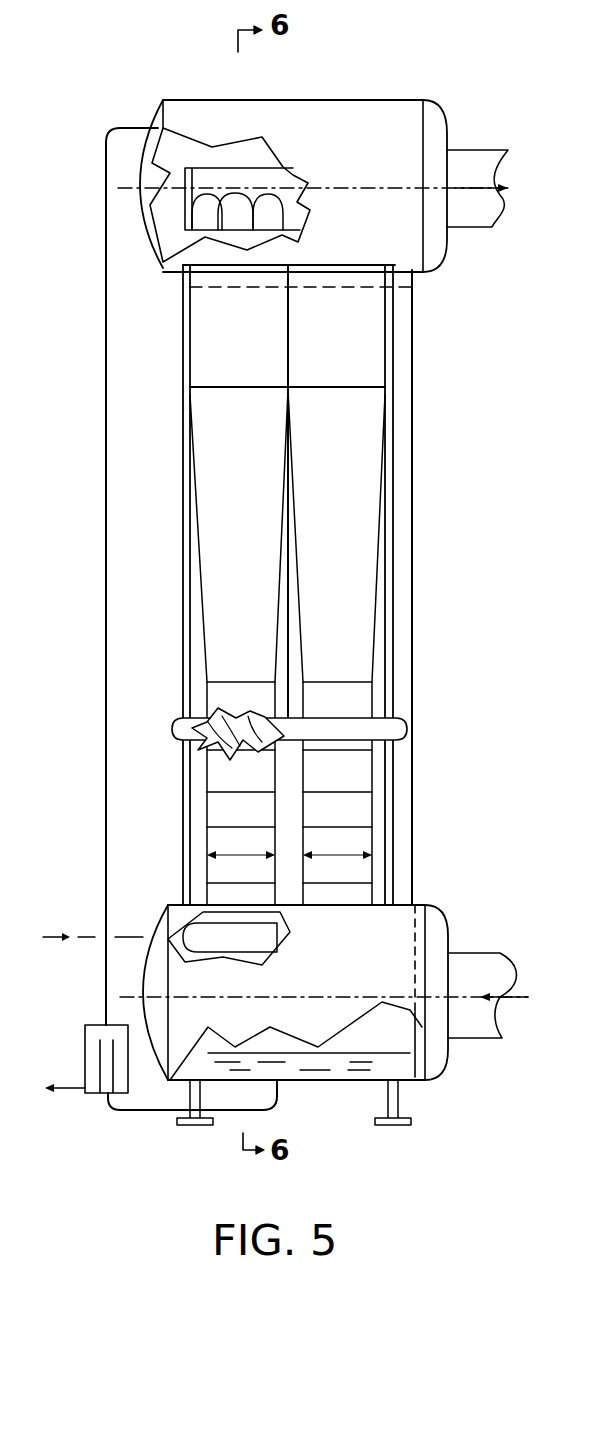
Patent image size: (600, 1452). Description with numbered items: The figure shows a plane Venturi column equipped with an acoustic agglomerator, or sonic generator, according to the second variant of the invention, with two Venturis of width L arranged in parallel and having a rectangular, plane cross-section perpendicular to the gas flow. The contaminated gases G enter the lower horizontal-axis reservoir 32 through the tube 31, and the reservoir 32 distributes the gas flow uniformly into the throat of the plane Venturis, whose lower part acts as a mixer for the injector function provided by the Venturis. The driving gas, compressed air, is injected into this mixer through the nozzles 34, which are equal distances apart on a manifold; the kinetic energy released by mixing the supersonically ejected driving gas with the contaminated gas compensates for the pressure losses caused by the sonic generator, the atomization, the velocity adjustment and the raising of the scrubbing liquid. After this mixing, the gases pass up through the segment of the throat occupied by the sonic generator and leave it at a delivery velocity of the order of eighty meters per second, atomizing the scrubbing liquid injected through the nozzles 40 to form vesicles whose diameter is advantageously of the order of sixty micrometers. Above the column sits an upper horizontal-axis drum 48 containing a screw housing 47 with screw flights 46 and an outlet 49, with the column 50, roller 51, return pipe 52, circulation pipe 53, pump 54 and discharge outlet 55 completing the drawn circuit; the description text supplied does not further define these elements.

The tube 31 is at (490, 1027).
The lower horizontal-axis reservoir 32 is at (367, 950).
The nozzles 34 is at (258, 918).
The nozzles 40 is at (237, 723).
The screw flights 46 is at (250, 192).
The screw housing 47 is at (173, 247).
The upper drum 48 is at (378, 123).
The outlet pipe 49 is at (465, 207).
The column 50 is at (288, 622).
The roller 51 is at (172, 724).
The return pipe 52 is at (413, 833).
The circulation pipe 53 is at (106, 853).
The pump 54 is at (93, 1033).
The discharge outlet 55 is at (46, 1093).